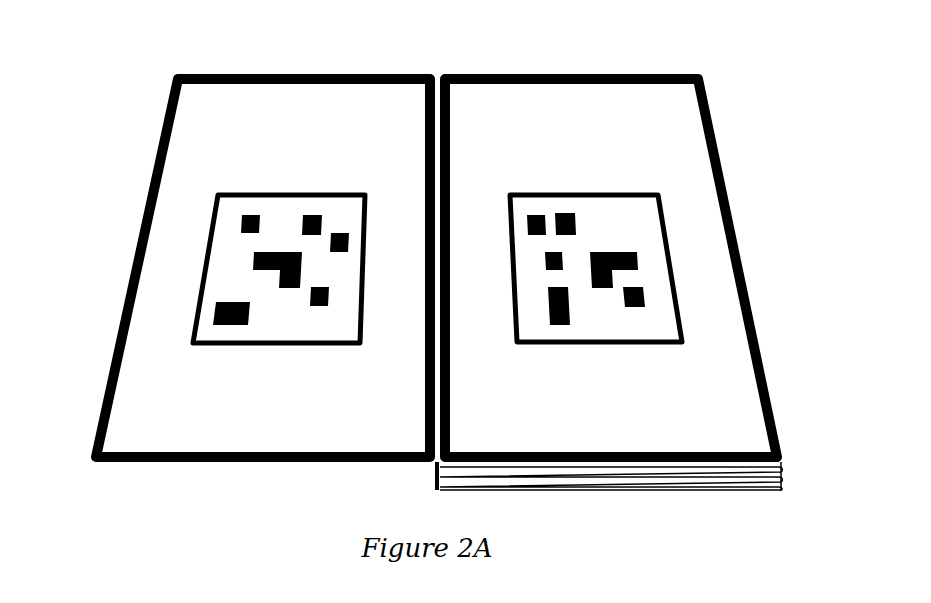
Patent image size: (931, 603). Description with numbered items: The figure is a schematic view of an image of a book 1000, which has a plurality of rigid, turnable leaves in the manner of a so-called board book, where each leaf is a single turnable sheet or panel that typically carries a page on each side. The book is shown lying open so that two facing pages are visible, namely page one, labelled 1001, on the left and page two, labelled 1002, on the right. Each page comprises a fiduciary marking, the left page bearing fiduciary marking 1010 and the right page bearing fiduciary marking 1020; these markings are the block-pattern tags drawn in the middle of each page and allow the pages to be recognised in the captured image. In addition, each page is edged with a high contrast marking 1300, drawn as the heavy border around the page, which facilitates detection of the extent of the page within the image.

The book 1000 is at (272, 512).
The page 1 1001 is at (243, 268).
The page 2 1002 is at (635, 268).
The fiduciary marking 1010 is at (200, 233).
The fiduciary marking 1020 is at (672, 235).
The high contrast marking 1300 is at (631, 279).